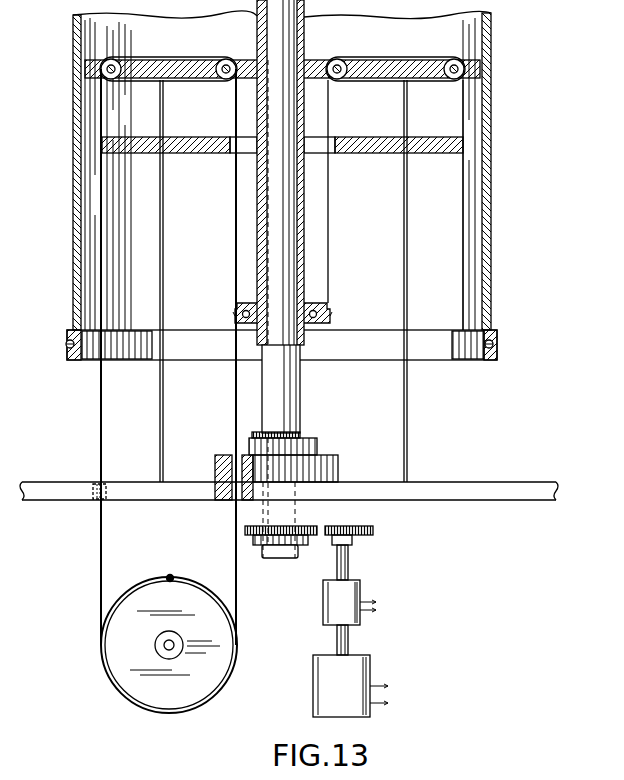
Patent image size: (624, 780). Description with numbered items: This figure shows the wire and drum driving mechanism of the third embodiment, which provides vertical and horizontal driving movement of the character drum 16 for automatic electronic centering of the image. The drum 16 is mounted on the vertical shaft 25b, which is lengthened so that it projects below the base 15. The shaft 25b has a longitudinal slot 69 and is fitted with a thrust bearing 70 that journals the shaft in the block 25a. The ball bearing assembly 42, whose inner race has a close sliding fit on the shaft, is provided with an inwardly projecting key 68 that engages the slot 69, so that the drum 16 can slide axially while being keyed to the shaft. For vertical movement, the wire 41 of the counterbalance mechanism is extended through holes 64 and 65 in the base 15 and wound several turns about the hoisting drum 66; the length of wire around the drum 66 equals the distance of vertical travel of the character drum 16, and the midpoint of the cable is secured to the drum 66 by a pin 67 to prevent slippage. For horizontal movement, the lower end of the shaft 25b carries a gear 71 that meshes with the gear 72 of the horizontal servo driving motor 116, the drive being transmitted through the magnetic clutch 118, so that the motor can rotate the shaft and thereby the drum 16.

The drum 16 is at (523, 60).
The longitudinal slot 69 is at (259, 224).
The key 68 is at (257, 293).
The ball bearing assembly 42 is at (255, 326).
The wire 41 is at (97, 420).
The hole 65 is at (232, 456).
The hole 64 is at (95, 502).
The pin 67 is at (171, 575).
The drum 66 is at (118, 650).
The shaft 25b is at (300, 406).
The thrust bearing 70 is at (305, 437).
The block 25a is at (340, 470).
The gear 71 is at (308, 527).
The gear 72 is at (362, 527).
The base 15 is at (470, 503).
The magnetic clutch 118 is at (362, 592).
The horizontal servo driving motor 116 is at (372, 669).